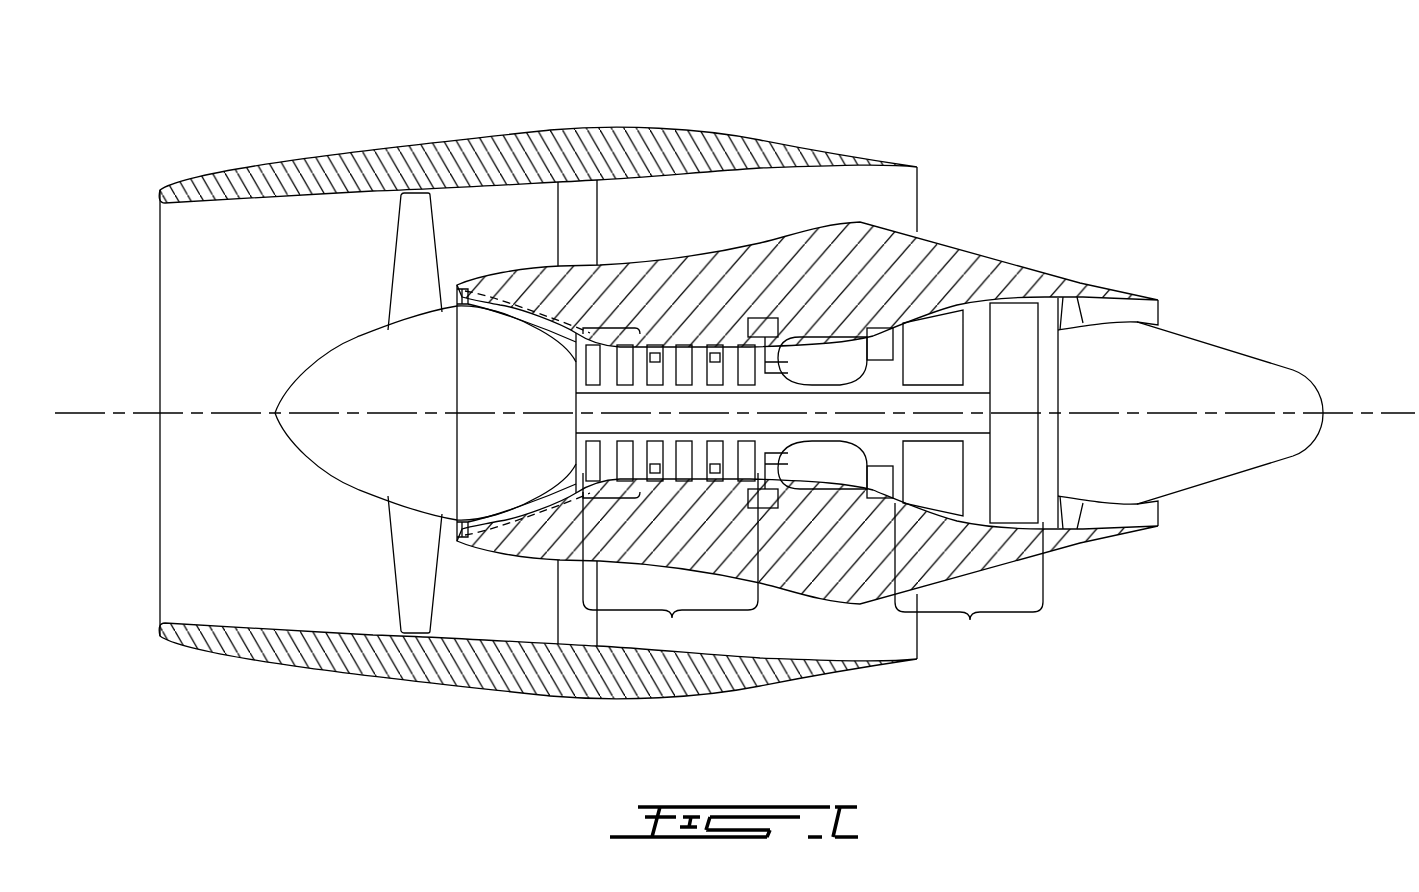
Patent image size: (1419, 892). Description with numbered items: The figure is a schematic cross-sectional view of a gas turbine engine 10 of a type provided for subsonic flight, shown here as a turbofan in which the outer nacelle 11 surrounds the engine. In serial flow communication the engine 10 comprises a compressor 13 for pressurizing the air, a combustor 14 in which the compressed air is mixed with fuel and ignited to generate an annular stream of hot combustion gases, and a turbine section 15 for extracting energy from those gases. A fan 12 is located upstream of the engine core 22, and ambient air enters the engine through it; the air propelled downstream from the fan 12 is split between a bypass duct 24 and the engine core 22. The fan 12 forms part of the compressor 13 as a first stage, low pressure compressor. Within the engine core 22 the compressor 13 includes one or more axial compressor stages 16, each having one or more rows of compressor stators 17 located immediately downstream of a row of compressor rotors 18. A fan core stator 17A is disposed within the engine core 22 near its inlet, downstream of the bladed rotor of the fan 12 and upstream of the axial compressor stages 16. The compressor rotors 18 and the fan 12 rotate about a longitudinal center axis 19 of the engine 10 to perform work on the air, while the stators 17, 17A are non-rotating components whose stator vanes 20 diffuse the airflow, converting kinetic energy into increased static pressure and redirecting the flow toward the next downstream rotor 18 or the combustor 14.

The gas turbine engine 10 is at (1075, 197).
The nacelle 11 is at (377, 253).
The fan 12 is at (410, 557).
The compressor 13 is at (670, 561).
The combustor 14 is at (812, 360).
The turbine section 15 is at (970, 620).
The axial compressor stage 16 is at (606, 333).
The compressor stator 17 is at (625, 472).
The fan core stator 17A is at (462, 288).
The compressor rotor 18 is at (658, 353).
The longitudinal center axis 19 is at (1388, 413).
The stator vane 20 is at (687, 457).
The engine core 22 is at (563, 328).
The bypass duct 24 is at (712, 220).